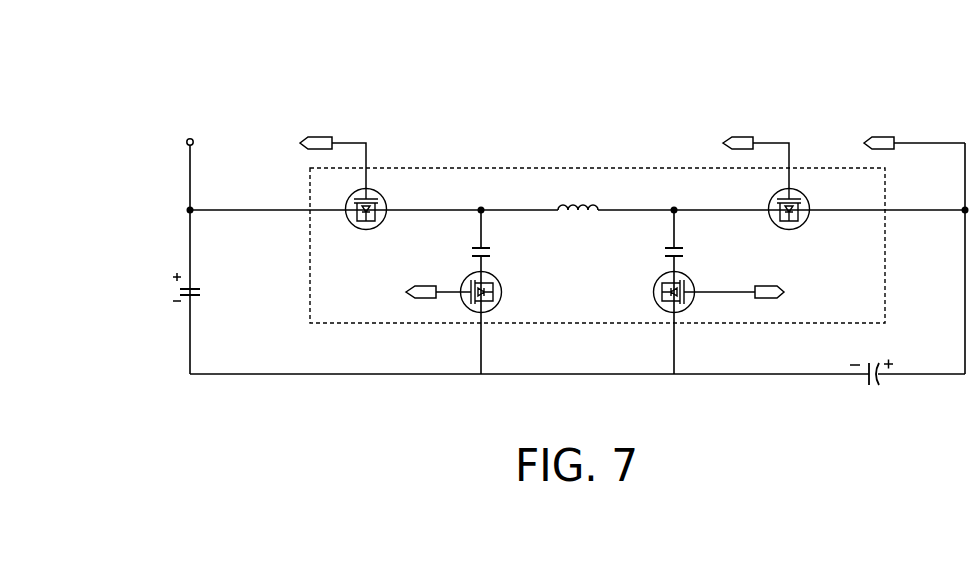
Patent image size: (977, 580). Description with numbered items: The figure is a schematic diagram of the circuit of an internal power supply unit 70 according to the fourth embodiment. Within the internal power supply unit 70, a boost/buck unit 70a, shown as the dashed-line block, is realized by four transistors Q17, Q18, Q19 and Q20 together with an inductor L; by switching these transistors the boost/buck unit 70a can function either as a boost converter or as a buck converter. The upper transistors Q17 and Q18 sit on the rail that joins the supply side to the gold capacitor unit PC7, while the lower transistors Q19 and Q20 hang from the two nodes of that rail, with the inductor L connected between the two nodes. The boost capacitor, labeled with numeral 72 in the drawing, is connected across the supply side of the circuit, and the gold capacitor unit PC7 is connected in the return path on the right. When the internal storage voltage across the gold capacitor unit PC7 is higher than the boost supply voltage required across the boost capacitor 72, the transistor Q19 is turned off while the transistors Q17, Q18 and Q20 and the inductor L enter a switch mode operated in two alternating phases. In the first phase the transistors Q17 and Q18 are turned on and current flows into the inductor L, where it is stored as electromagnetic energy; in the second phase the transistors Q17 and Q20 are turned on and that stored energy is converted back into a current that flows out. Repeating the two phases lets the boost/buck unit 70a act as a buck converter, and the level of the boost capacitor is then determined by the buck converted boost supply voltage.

The internal power supply unit 70 is at (69, 70).
The boost/buck unit 70a is at (520, 167).
The bypass capacitor Cb7 72 is at (168, 315).
The transistor Q17 is at (385, 208).
The transistor Q18 is at (769, 203).
The transistor Q19 is at (505, 292).
The transistor Q20 is at (651, 292).
The inductor L is at (578, 222).
The gold capacitor unit PC7 is at (871, 375).